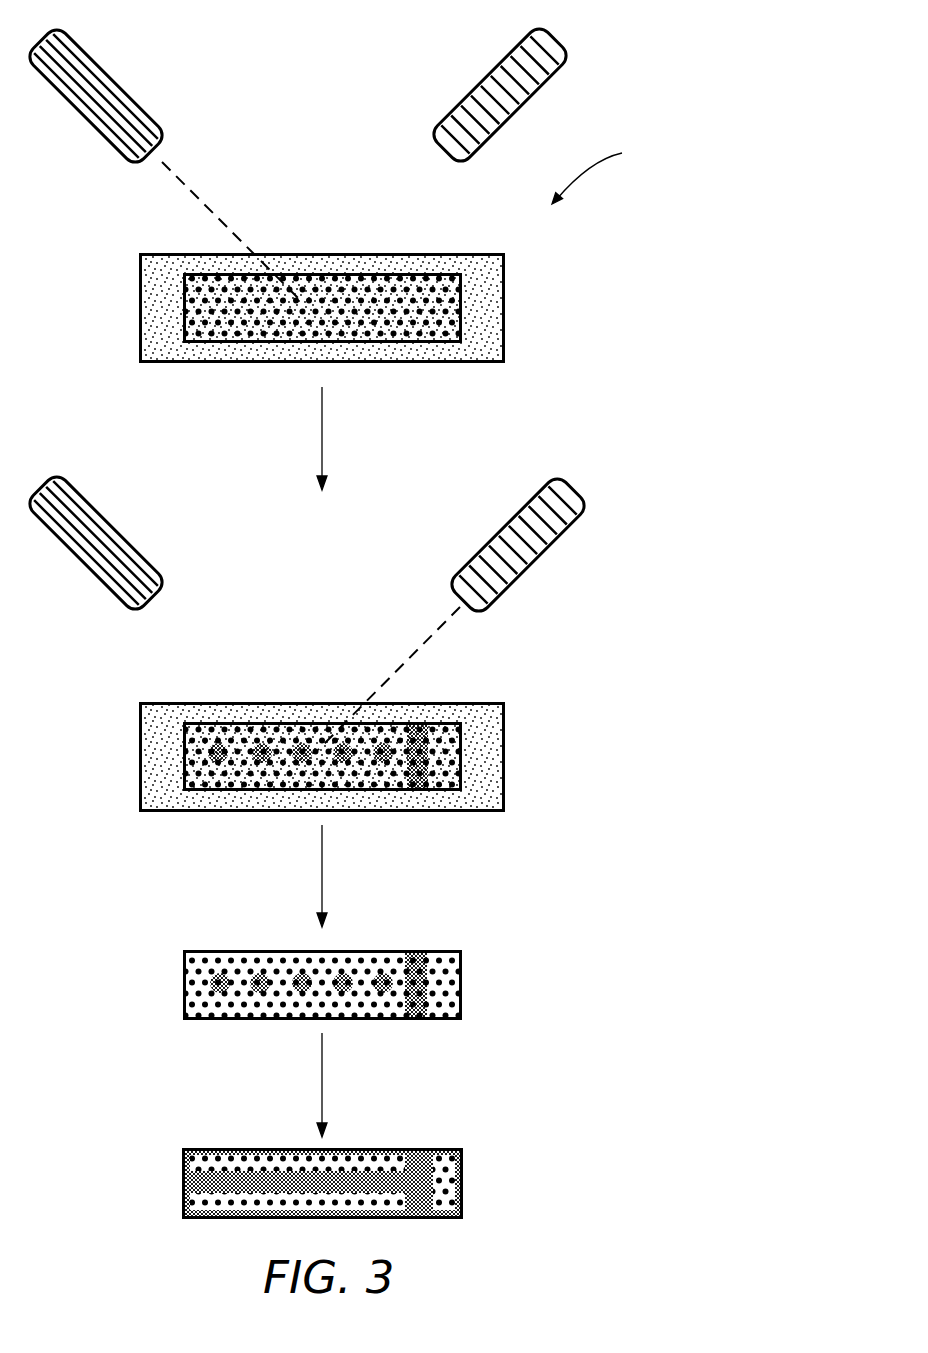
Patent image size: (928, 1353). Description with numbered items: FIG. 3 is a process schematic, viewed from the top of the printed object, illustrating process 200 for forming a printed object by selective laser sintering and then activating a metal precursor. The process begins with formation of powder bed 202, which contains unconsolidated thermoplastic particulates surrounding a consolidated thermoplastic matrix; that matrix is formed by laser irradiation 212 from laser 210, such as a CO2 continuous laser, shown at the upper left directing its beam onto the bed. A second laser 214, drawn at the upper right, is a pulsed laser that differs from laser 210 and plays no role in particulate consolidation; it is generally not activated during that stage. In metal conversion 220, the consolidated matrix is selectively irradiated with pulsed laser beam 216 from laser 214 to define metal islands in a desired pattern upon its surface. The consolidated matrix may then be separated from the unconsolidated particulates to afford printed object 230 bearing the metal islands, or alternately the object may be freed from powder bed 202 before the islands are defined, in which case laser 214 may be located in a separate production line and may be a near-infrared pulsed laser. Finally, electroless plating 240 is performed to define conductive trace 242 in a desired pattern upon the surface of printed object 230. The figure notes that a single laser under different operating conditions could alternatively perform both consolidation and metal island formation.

The process 200 is at (610, 173).
The powder bed 202 is at (366, 538).
The laser 210 is at (116, 78).
The laser irradiation 212 is at (212, 198).
The laser 214 is at (477, 84).
The pulsed laser beam 216 is at (417, 650).
The metal conversion 220 is at (322, 432).
The printed object 230 is at (343, 1084).
The electroless plating 240 is at (322, 880).
The conductive trace 242 is at (240, 1168).